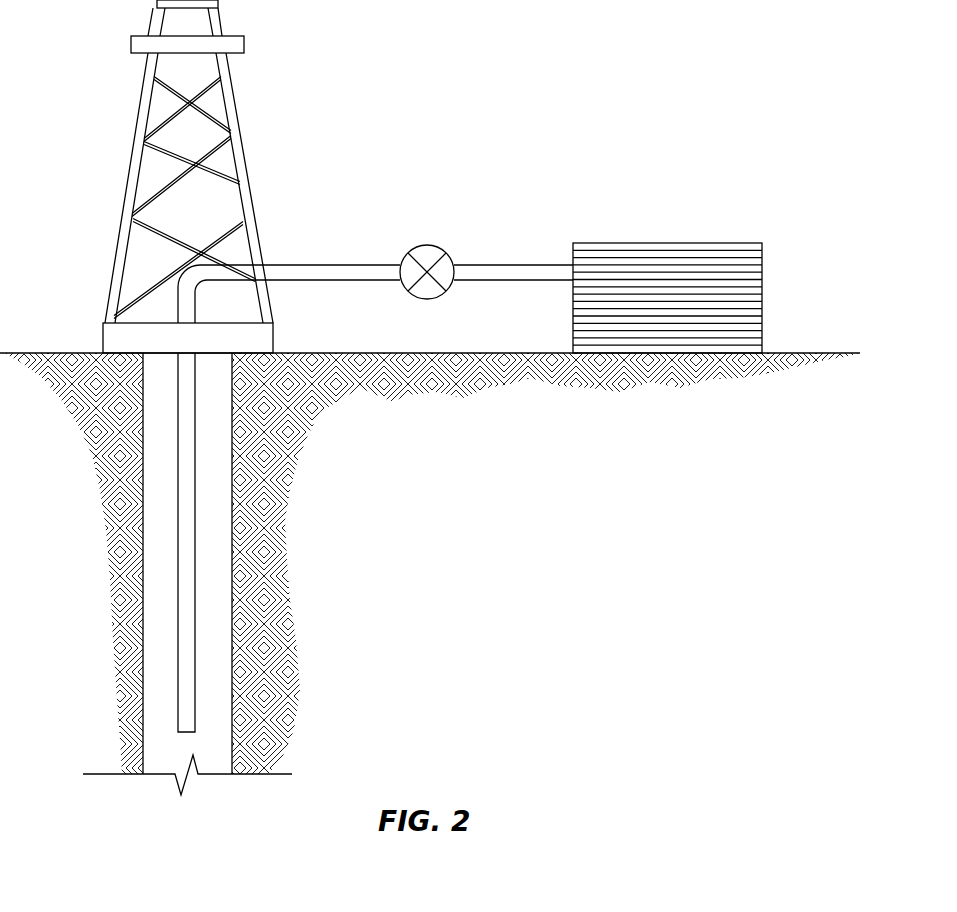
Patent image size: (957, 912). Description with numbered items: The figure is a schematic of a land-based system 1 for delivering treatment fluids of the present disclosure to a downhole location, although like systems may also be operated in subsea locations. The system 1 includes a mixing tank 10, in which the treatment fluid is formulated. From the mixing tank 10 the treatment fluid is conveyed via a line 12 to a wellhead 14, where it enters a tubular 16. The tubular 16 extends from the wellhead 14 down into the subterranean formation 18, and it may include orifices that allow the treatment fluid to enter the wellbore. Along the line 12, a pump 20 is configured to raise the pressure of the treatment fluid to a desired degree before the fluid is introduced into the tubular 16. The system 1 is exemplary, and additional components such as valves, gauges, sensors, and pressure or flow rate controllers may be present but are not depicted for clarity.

The system 1 is at (82, 46).
The mixing tank 10 is at (742, 243).
The line 12 is at (316, 264).
The wellhead 14 is at (102, 340).
The tubular 16 is at (196, 493).
The subterranean formation 18 is at (57, 584).
The pump 20 is at (434, 246).